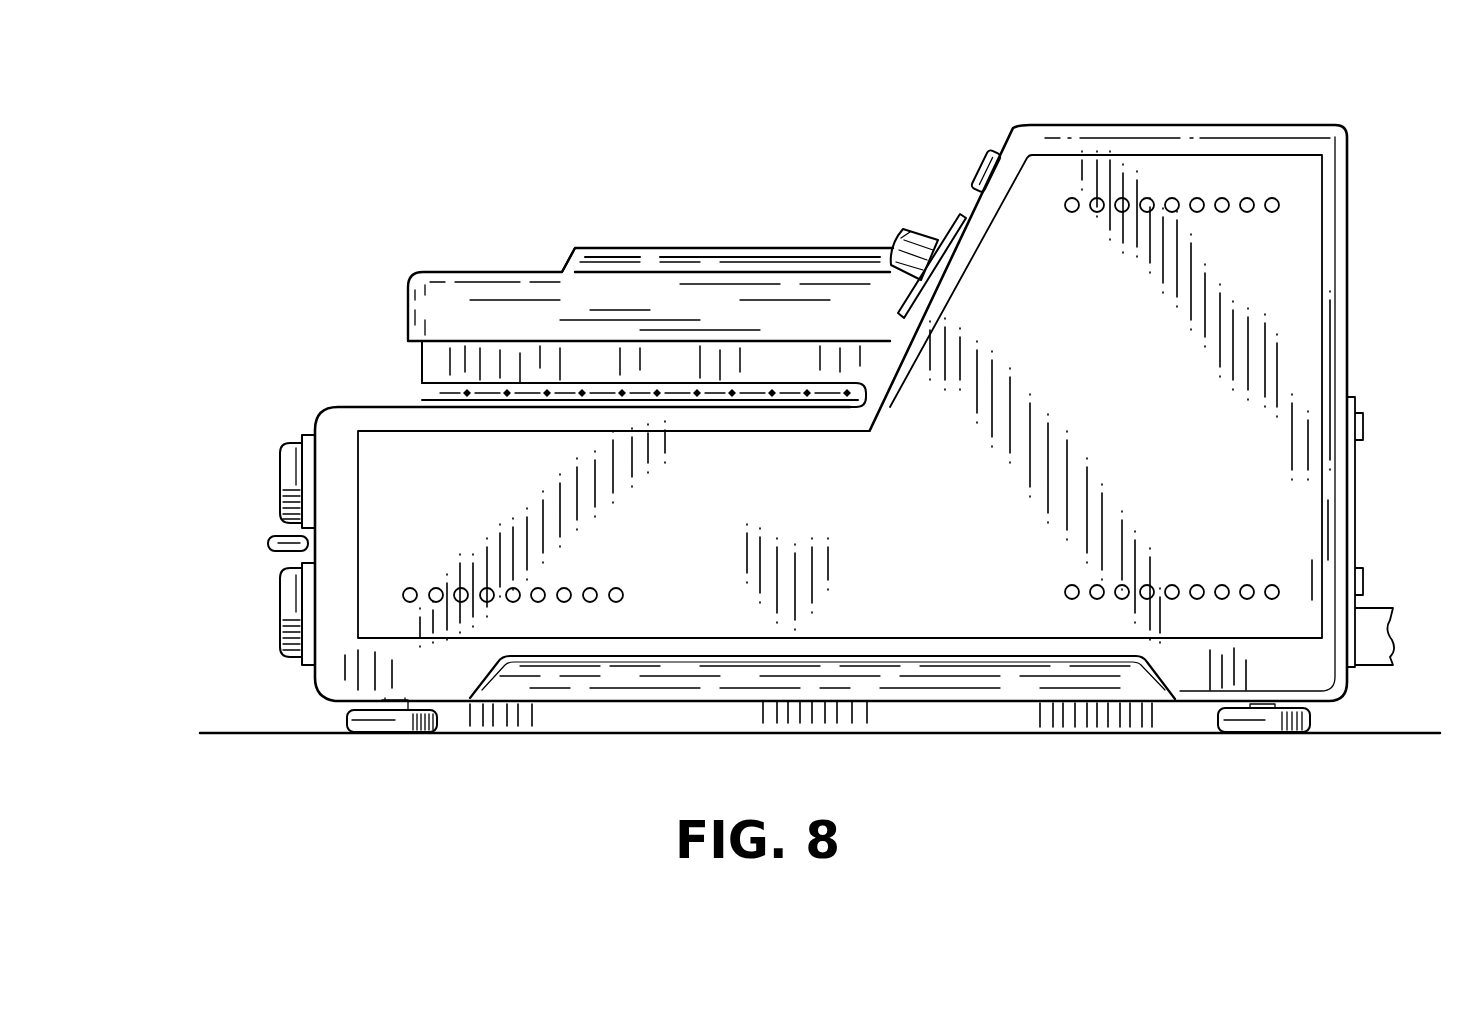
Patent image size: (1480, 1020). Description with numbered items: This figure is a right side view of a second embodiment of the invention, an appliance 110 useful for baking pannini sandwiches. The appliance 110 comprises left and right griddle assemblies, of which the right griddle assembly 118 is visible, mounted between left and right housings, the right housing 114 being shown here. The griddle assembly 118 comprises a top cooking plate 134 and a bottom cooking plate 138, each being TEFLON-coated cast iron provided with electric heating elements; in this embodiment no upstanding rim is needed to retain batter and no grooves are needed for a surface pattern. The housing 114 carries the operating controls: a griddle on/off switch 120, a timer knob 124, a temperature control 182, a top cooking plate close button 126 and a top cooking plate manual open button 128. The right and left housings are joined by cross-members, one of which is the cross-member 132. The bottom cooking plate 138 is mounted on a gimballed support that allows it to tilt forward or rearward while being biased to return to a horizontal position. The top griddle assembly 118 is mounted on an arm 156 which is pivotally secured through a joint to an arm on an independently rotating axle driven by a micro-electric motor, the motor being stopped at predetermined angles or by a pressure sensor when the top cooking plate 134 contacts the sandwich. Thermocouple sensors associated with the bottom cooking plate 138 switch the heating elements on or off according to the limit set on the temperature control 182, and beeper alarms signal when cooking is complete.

The pannini sandwich baking embodiment 110 is at (497, 190).
The right housing 114 is at (1342, 337).
The right griddle assembly 118 is at (428, 270).
The griddle on/off switch 120 is at (268, 545).
The timer knob 124 is at (905, 237).
The top cooking plate close button 126 is at (281, 468).
The top cooking plate manual open button 128 is at (281, 600).
The cross-member 132 is at (1358, 523).
The top cooking plate 134 is at (425, 386).
The bottom cooking plate 138 is at (428, 395).
The arm 156 is at (683, 248).
The temperature control 182 is at (972, 162).